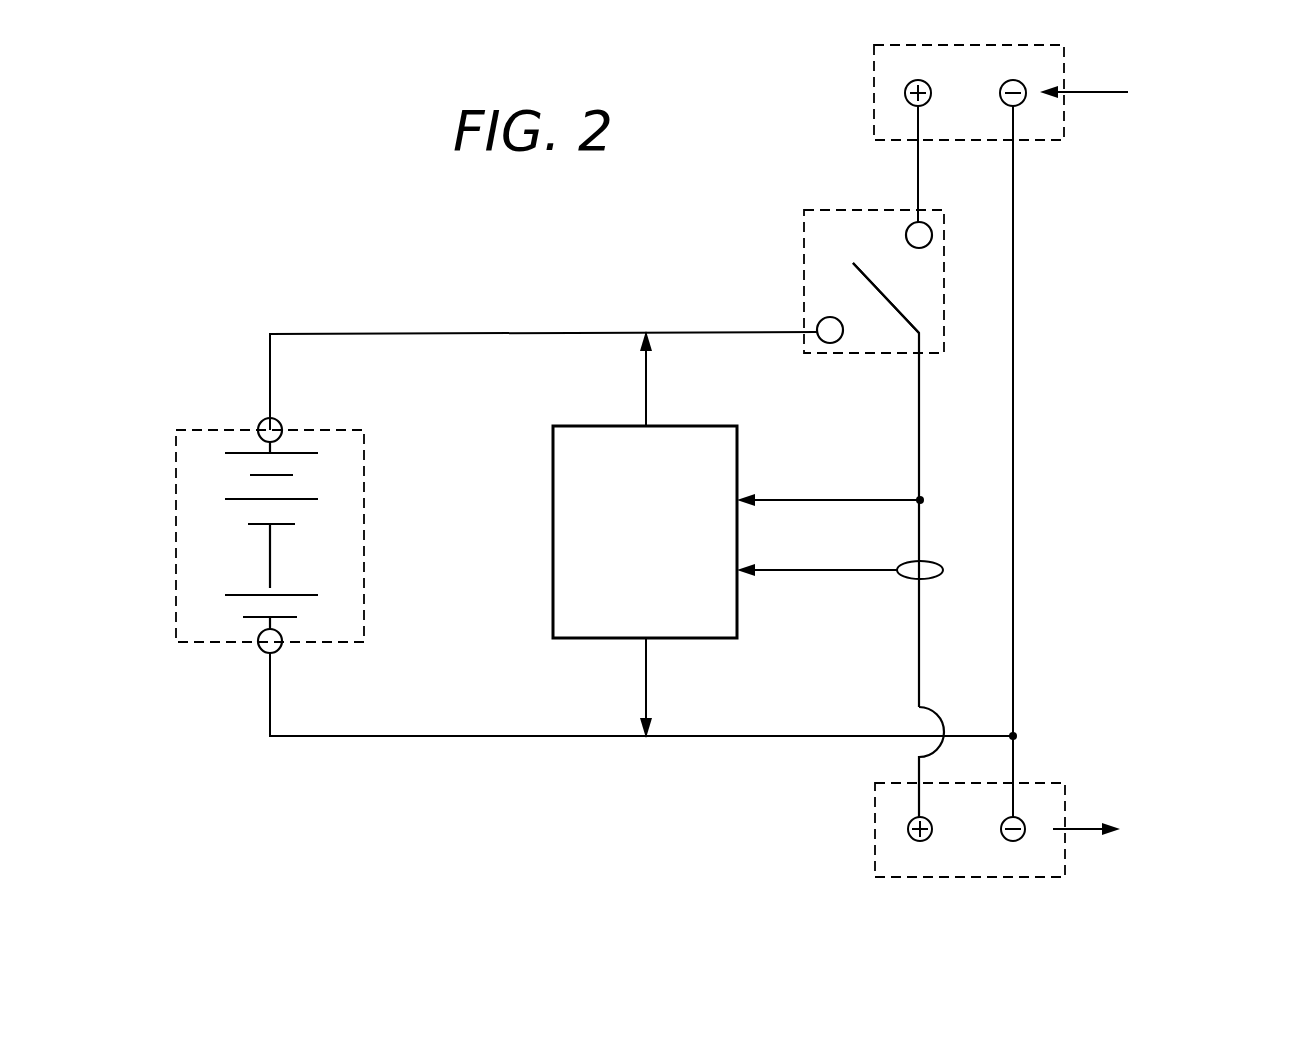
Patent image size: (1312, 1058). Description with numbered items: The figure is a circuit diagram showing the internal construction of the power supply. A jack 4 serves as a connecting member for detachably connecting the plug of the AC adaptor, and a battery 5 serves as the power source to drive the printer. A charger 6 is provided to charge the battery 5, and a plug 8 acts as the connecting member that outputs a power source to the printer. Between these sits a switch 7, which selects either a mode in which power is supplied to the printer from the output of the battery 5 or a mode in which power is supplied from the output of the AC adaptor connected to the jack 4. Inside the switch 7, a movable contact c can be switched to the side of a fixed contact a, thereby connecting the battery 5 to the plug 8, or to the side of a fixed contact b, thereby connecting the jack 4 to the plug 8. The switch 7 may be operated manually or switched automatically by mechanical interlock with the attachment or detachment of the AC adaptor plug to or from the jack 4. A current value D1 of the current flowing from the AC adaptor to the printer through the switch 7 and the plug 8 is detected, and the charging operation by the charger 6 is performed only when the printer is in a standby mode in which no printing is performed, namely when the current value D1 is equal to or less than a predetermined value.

The jack 4 is at (893, 141).
The battery 5 is at (312, 428).
The charger 6 is at (726, 424).
The switch 7 is at (945, 269).
The plug 8 is at (875, 817).
The current value D1 is at (938, 560).
The fixed contact a is at (830, 317).
The fixed contact b is at (929, 222).
The movable contact c is at (887, 300).